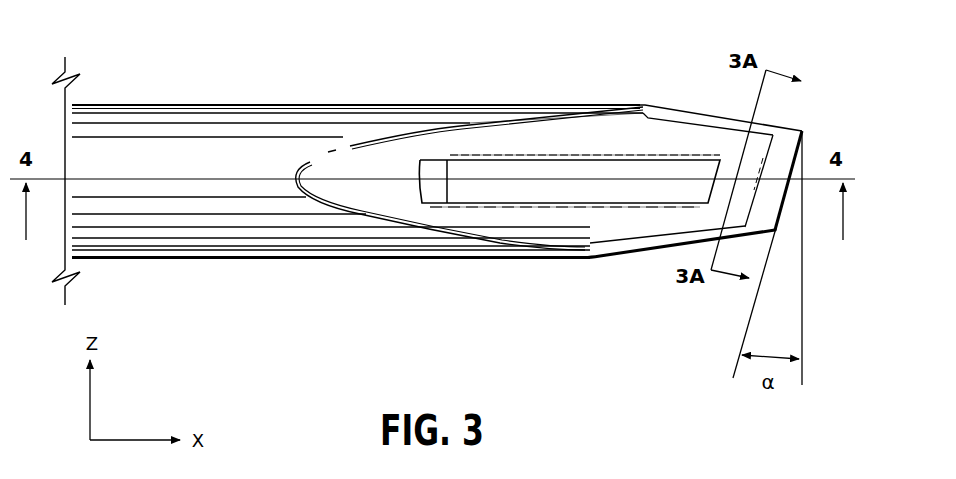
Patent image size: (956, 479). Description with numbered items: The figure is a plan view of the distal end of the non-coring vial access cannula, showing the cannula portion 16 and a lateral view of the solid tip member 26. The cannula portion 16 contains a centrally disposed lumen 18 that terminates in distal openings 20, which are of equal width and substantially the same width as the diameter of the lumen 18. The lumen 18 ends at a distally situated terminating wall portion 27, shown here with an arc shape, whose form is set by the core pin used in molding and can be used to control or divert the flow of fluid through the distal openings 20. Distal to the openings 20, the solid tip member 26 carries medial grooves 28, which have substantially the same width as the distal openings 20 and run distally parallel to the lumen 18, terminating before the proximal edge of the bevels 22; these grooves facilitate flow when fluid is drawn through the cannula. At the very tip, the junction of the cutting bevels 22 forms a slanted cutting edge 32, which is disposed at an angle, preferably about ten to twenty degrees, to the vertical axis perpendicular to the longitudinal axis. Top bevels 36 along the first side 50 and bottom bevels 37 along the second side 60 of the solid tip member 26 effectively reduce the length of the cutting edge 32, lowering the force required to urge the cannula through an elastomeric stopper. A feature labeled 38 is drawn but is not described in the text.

The cannula portion 16 is at (135, 130).
The centrally disposed lumen 18 is at (437, 167).
The distal openings 20 is at (460, 182).
The bevels 22 is at (780, 147).
The solid tip member 26 is at (587, 145).
The terminating wall portion 27 is at (543, 200).
The medial grooves 28 is at (572, 182).
The cutting edge 32 is at (797, 164).
The top bevels 36 is at (660, 108).
The bottom bevels 37 is at (623, 252).
The bevel surface 38 is at (367, 198).
The first side 50 is at (330, 105).
The second side 60 is at (173, 260).